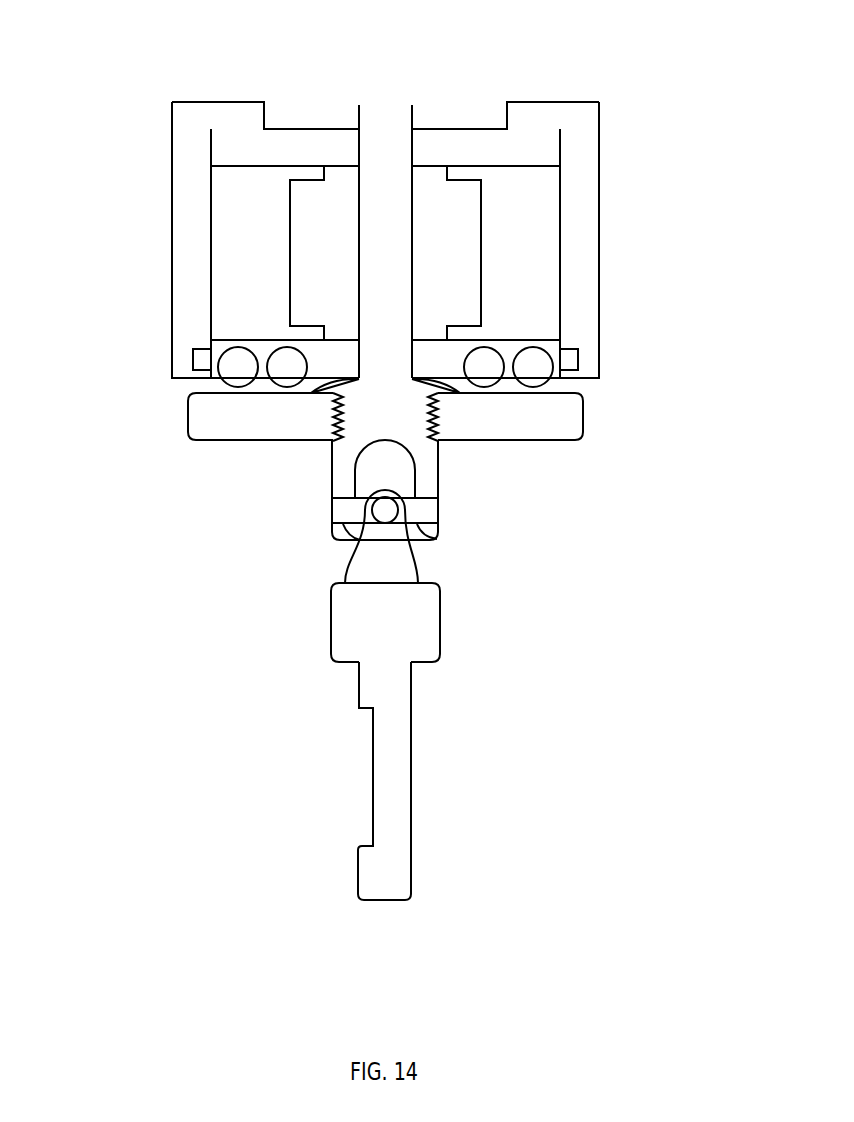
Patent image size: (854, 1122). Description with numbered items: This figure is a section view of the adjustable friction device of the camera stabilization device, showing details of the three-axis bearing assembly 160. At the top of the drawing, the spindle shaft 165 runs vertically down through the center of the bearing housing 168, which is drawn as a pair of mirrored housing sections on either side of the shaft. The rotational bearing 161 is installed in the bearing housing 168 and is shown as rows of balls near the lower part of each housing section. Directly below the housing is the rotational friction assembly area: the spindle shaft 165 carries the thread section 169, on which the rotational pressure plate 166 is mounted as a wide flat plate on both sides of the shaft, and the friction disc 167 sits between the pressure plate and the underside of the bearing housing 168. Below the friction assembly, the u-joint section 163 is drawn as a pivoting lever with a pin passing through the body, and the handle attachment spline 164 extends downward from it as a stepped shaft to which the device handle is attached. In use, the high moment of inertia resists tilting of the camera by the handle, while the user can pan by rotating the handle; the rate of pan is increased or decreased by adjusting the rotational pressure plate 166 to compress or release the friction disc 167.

The three-axis bearing assembly 160 is at (310, 677).
The rotational bearing 161 is at (553, 360).
The u-joint section 163 is at (438, 540).
The handle attachment spline 164 is at (411, 792).
The spindle shaft 165 is at (388, 108).
The rotational pressure plate 166 is at (538, 447).
The friction disc 167 is at (308, 398).
The bearing housing 168 is at (170, 207).
The thread section 169 is at (447, 448).